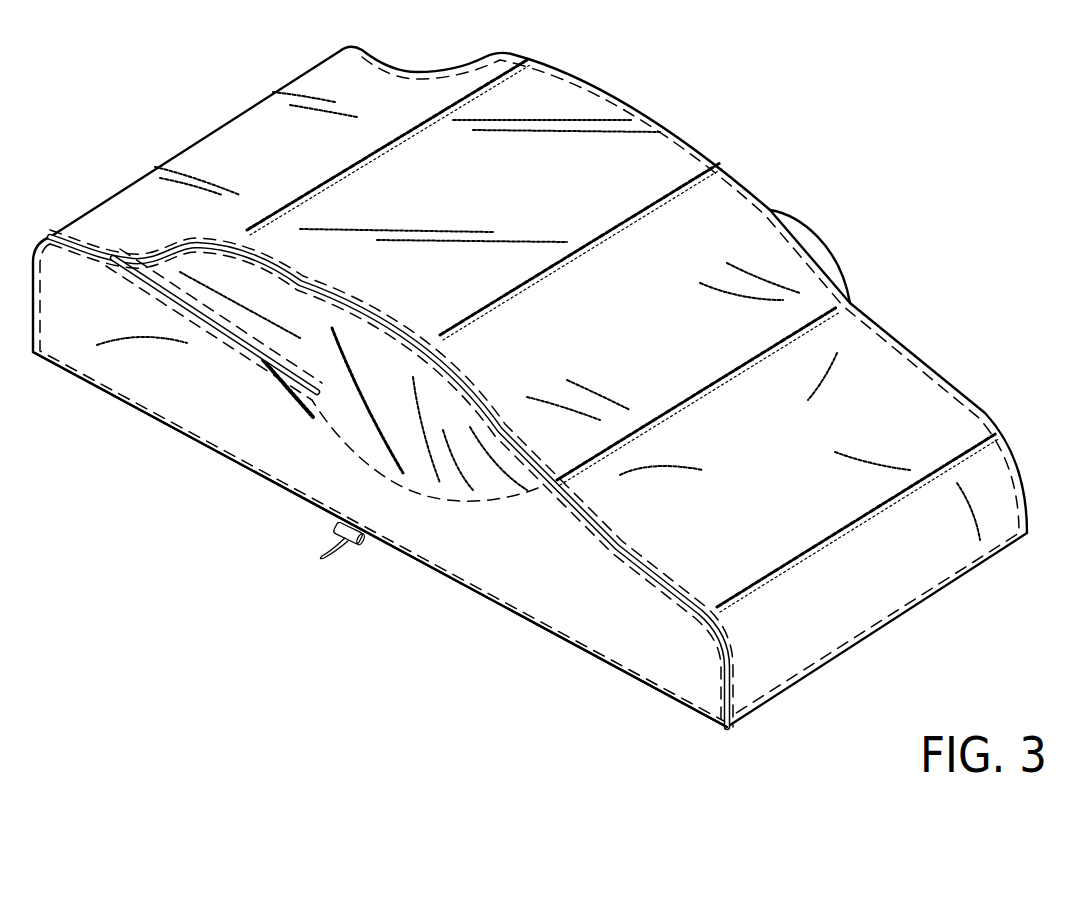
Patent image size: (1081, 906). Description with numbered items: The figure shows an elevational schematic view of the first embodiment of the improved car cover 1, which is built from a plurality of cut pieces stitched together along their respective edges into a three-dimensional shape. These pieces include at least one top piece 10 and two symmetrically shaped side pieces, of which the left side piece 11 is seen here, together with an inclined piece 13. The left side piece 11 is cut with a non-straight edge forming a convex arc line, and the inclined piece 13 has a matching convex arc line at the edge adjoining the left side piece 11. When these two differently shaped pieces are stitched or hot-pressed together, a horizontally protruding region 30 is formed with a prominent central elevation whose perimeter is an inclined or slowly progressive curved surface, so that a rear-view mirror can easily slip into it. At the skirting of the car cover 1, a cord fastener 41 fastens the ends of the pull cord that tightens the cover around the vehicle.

The car cover 1 is at (935, 215).
The top piece 10 is at (620, 157).
The left side piece 11 is at (193, 375).
The inclined piece 13 is at (195, 267).
The protruding region 30 is at (817, 253).
The cord fastener 41 is at (353, 543).